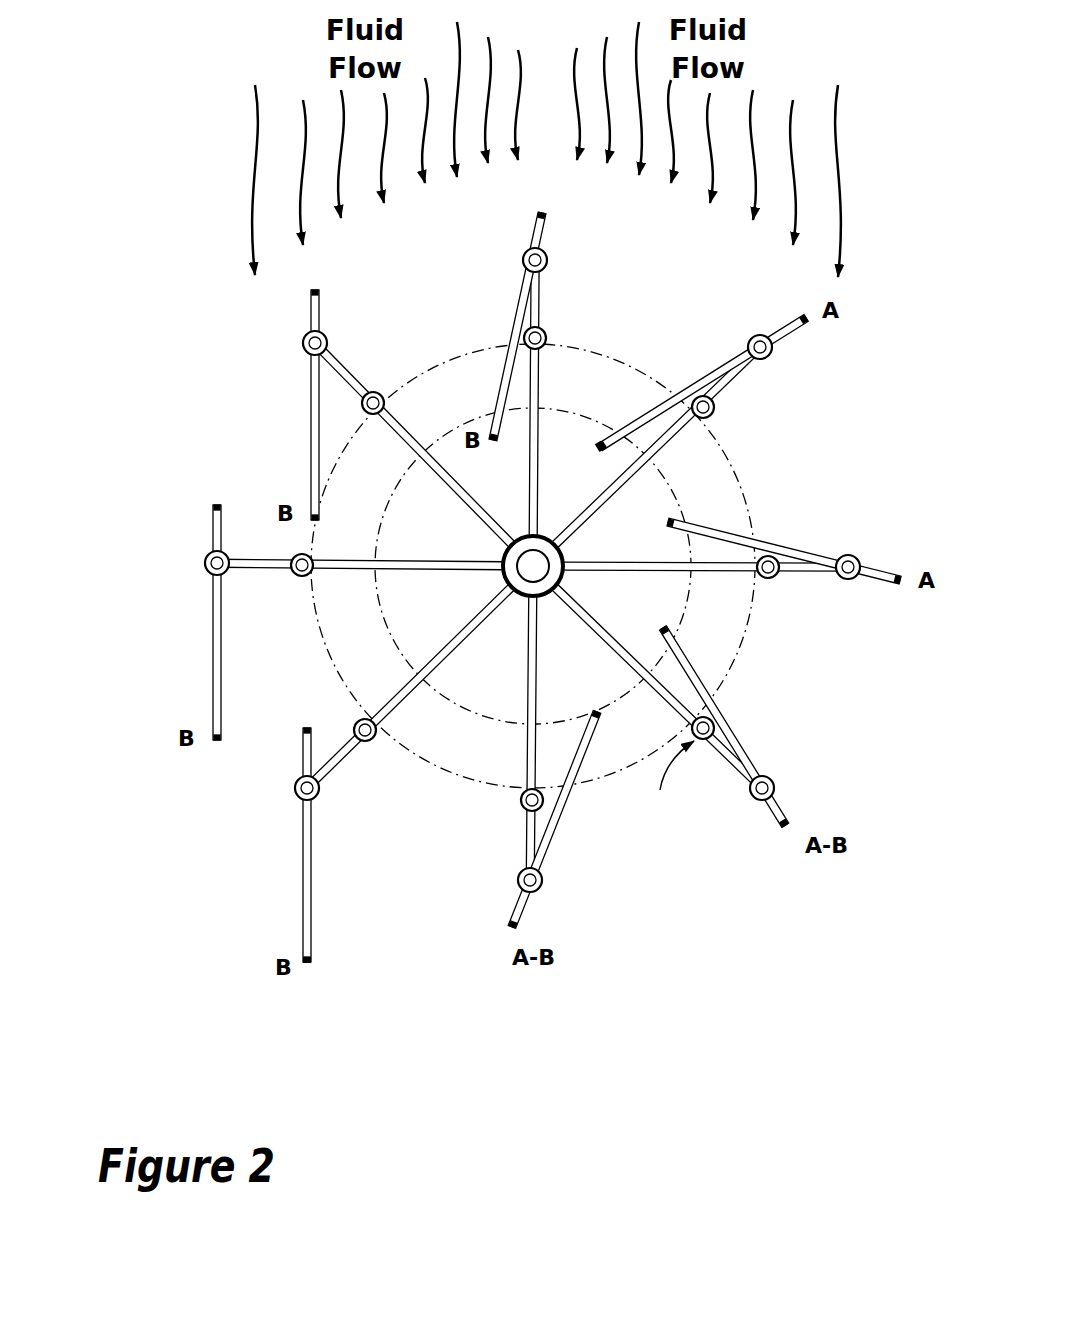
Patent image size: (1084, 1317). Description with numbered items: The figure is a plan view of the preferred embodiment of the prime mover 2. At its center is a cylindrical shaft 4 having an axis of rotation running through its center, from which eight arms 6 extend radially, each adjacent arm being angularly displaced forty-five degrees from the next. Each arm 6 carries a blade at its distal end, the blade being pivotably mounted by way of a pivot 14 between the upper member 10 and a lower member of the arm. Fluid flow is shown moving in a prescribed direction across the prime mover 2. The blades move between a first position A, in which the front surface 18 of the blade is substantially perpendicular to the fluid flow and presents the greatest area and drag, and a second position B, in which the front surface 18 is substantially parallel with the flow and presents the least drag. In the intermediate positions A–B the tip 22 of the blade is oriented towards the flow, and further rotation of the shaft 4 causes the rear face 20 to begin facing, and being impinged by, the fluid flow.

The prime mover 2 is at (660, 921).
The shaft 4 is at (496, 550).
The arm 6 is at (690, 648).
The upper member 10 is at (520, 657).
The pivot 14 is at (766, 775).
The front surface 18 is at (711, 361).
The rear face 20 is at (319, 876).
The tip 22 is at (600, 447).